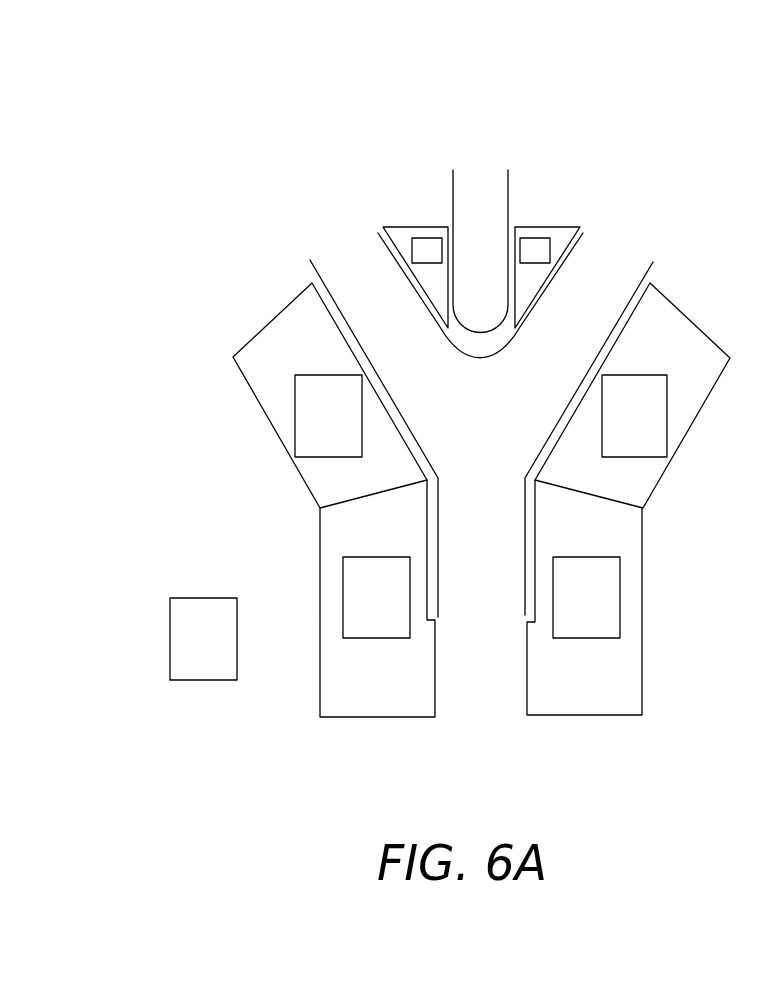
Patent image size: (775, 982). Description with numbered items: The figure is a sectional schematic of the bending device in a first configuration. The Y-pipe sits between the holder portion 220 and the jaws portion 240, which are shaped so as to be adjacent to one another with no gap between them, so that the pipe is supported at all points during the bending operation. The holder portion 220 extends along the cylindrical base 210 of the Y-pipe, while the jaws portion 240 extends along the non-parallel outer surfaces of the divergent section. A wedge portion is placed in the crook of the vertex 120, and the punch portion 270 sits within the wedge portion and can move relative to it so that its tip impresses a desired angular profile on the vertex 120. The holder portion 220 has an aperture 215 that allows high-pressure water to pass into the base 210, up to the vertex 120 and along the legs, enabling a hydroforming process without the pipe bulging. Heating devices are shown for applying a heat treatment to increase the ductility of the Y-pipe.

The vertex 120 is at (480, 358).
The base 210 is at (497, 607).
The aperture 215 is at (478, 708).
The holder portion 220 is at (642, 602).
The jaws portion 240 is at (270, 438).
The punch portion 270 is at (508, 188).